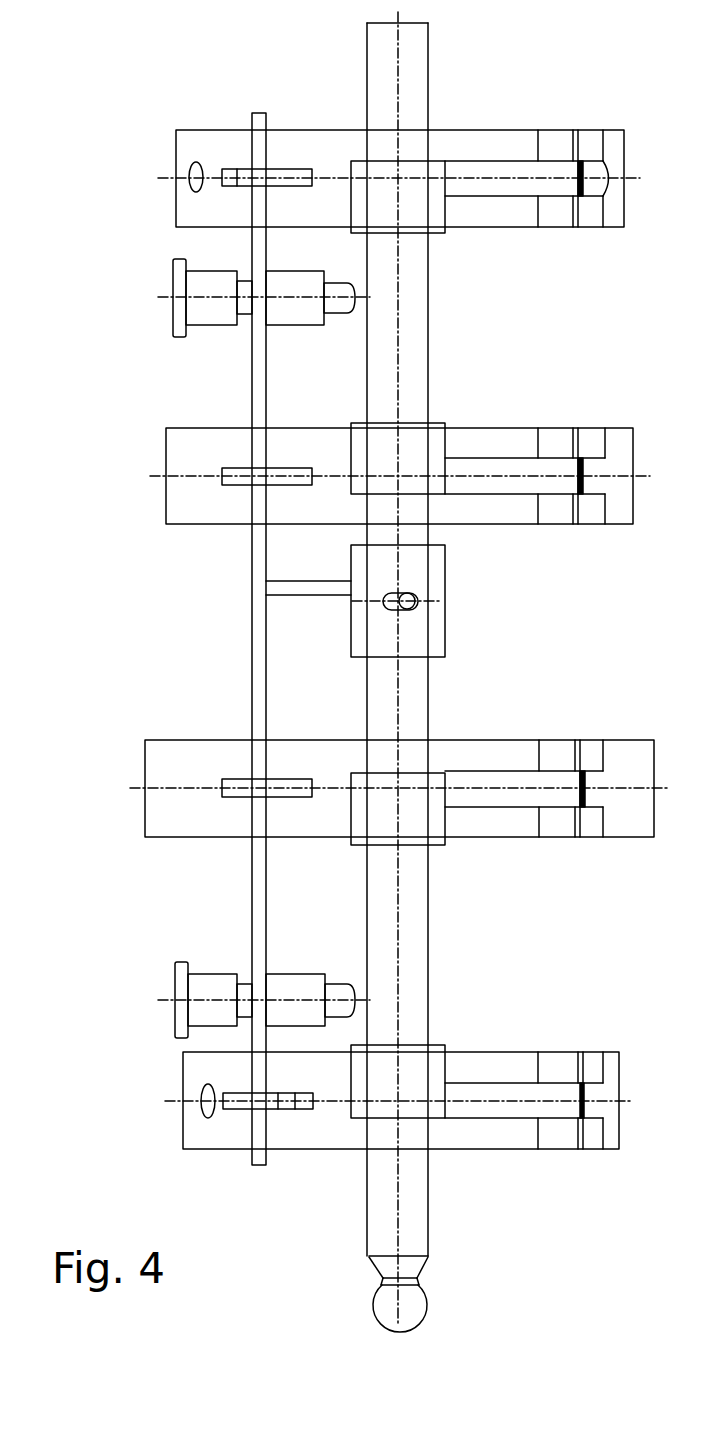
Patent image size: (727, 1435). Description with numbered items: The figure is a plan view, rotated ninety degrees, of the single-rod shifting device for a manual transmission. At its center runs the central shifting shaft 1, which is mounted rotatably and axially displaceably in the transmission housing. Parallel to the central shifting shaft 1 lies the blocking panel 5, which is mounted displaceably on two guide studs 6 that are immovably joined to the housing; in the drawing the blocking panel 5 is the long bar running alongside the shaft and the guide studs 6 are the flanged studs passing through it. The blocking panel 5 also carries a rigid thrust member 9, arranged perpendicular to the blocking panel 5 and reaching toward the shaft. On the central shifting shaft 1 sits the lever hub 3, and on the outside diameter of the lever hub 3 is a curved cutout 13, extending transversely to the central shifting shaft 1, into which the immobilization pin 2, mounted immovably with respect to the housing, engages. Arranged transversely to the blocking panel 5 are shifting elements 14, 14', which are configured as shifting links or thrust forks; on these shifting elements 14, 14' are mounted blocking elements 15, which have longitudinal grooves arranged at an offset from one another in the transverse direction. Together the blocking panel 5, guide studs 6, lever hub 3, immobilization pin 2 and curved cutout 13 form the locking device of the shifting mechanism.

The central shifting shaft 1 is at (413, 354).
The immobilization pin 2 is at (418, 598).
The lever hub 3 is at (427, 565).
The blocking panel 5 is at (260, 649).
The guide stud 6 is at (337, 290).
The rigid thrust member 9 is at (313, 587).
The curved cutout 13 is at (420, 608).
The shifting element 14 is at (369, 157).
The shifting element 14' is at (349, 450).
The blocking element 15 is at (223, 182).